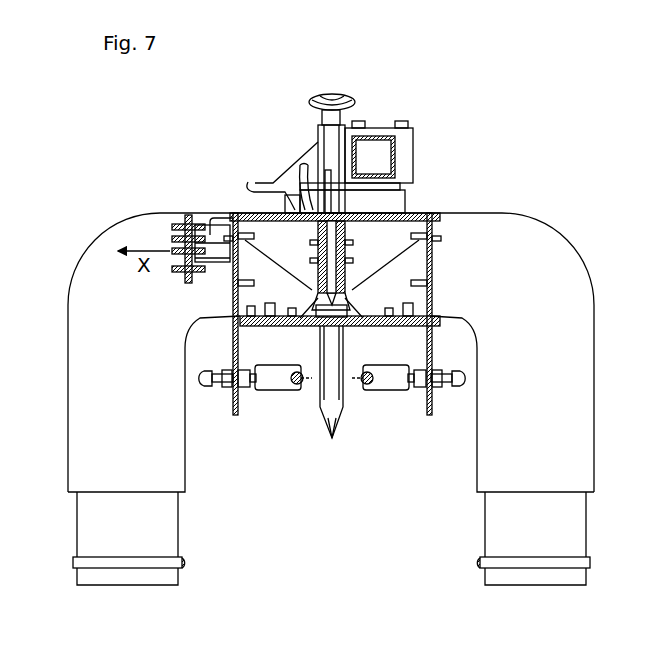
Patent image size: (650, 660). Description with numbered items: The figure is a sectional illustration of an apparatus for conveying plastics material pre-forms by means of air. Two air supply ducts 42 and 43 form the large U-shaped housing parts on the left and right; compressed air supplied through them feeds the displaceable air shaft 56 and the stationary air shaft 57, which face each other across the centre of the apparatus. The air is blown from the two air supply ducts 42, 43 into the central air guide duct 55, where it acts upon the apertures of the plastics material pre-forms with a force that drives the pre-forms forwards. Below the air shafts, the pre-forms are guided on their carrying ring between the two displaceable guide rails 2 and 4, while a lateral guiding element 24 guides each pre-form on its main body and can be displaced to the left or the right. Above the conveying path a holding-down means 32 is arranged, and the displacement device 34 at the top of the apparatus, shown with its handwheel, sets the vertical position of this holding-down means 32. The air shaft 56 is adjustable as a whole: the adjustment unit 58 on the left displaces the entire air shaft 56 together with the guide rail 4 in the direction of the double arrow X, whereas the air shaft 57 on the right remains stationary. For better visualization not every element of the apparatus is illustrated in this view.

The guide rail 2 is at (328, 308).
The guide rail 4 is at (337, 434).
The lateral guiding element 24 is at (388, 384).
The holding-down means 32 is at (321, 398).
The displacement device 34 is at (342, 98).
The air supply duct 42 is at (548, 250).
The air supply duct 43 is at (85, 345).
The air guide duct 55 is at (338, 304).
The displaceable air shaft 56 is at (240, 213).
The stationary air shaft 57 is at (422, 212).
The adjustment unit 58 is at (185, 213).